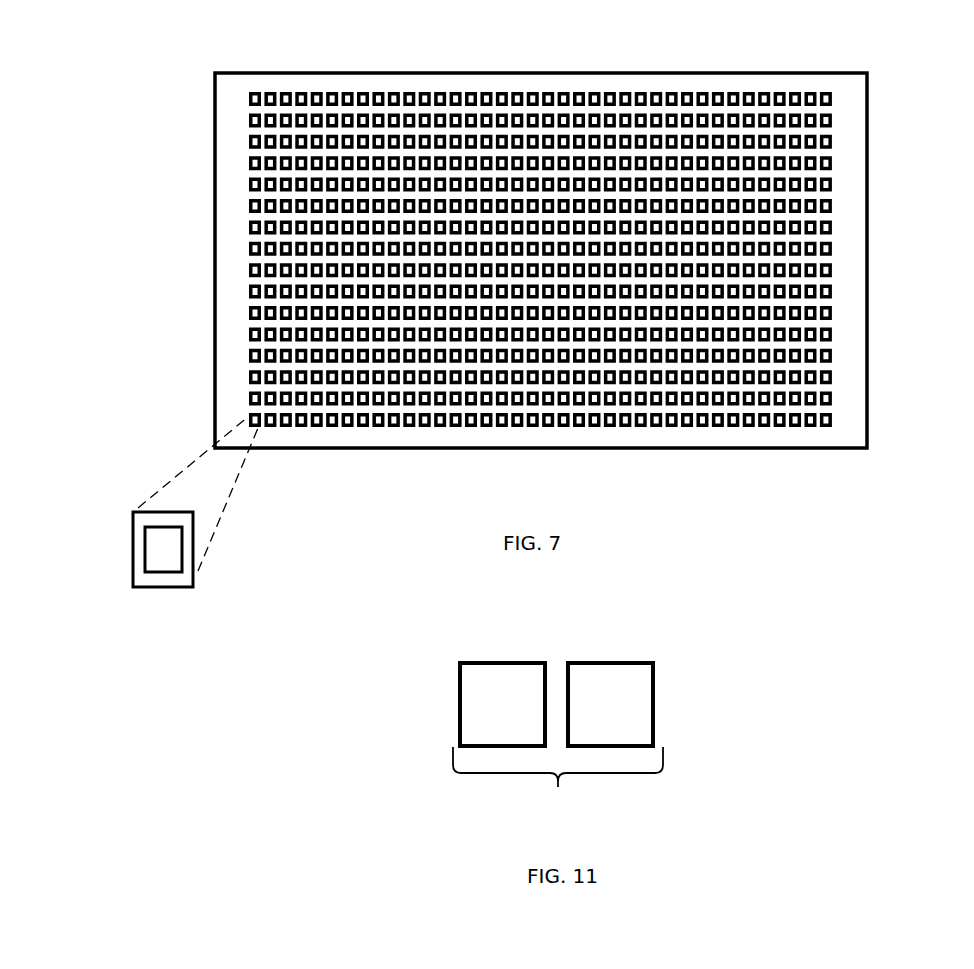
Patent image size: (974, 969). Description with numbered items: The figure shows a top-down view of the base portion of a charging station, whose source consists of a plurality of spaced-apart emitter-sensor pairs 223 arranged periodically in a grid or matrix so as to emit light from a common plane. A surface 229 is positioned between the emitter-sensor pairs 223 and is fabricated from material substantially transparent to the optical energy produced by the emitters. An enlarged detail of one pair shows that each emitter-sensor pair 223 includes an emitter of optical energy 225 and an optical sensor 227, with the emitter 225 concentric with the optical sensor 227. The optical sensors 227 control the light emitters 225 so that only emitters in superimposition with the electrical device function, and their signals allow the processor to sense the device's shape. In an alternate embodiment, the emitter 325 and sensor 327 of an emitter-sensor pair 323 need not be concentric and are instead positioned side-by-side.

In FIG. 7, the emitter-sensor pair 223 is at (780, 92).
In FIG. 7, the emitter of optical energy 225 is at (148, 587).
In FIG. 7, the optical sensor 227 is at (145, 548).
In FIG. 7, the surface 229 is at (851, 306).
In FIG. 11, the emitter-sensor pair 323 is at (558, 791).
In FIG. 11, the emitter 325 is at (498, 661).
In FIG. 11, the sensor 327 is at (610, 661).